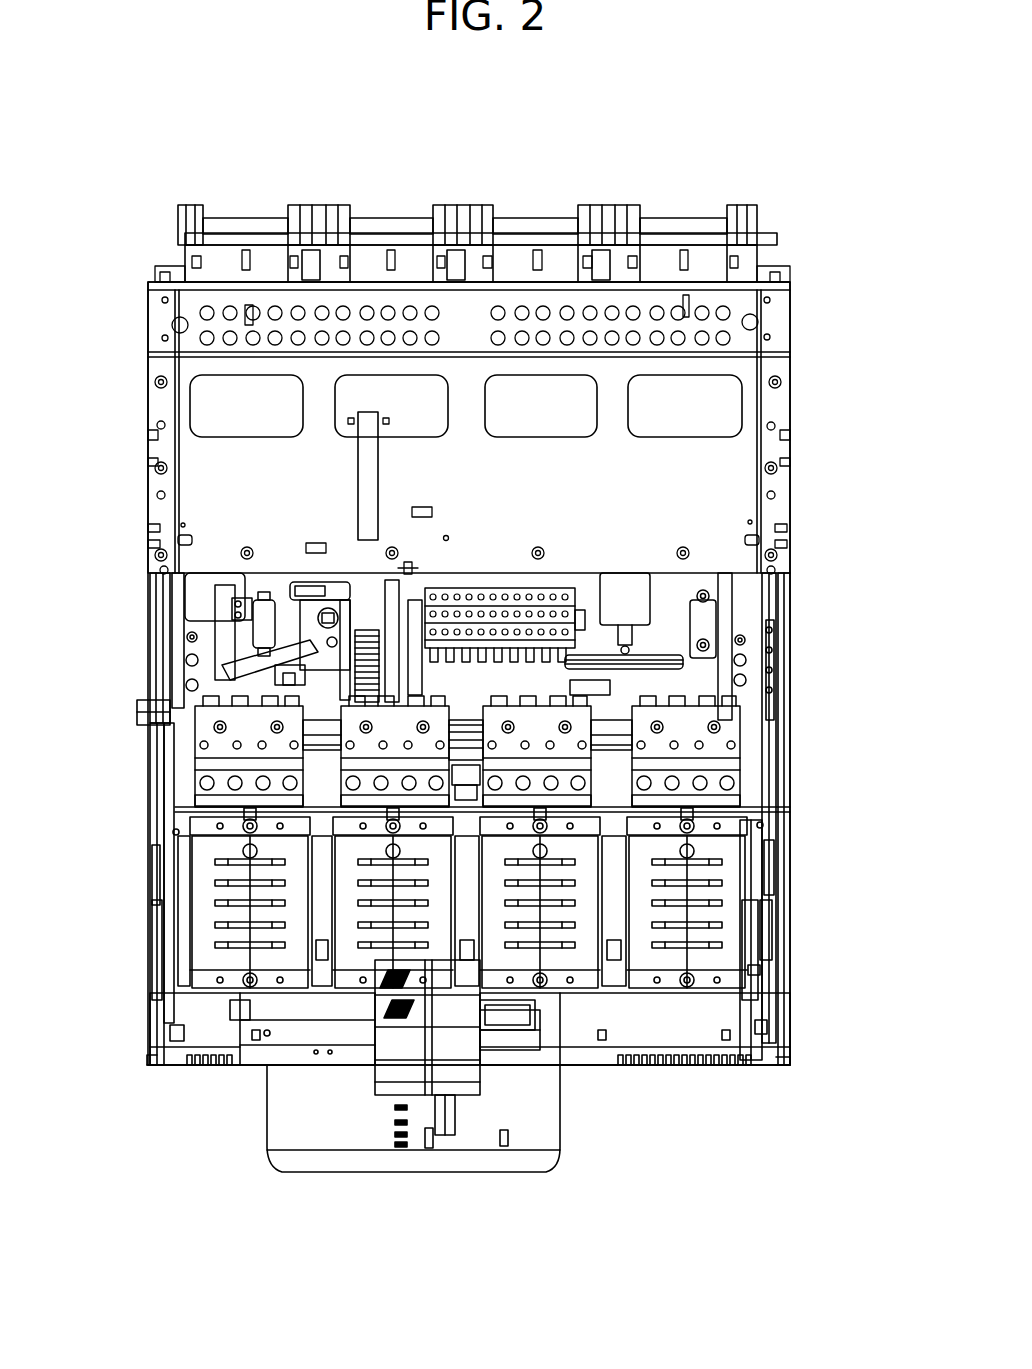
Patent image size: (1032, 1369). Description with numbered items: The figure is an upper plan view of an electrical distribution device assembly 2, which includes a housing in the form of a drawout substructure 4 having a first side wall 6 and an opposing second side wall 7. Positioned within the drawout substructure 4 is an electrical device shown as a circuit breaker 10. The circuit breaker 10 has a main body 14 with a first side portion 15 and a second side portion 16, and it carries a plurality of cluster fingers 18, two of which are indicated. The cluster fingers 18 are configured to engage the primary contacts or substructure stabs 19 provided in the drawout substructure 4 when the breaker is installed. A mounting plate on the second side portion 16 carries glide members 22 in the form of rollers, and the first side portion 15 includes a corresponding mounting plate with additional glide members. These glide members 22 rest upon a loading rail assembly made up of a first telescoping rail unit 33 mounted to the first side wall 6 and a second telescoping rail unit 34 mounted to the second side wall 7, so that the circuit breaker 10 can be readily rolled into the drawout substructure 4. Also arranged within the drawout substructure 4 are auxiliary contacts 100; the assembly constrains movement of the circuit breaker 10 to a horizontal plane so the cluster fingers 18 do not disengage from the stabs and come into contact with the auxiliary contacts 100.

The electrical distribution device assembly 2 is at (770, 1283).
The drawout substructure 4 is at (795, 948).
The first side wall 6 is at (148, 655).
The second side wall 7 is at (790, 402).
The circuit breaker 10 is at (658, 1138).
The main body 14 is at (762, 1072).
The first side portion 15 is at (148, 1055).
The second side portion 16 is at (790, 1042).
The cluster fingers 18 is at (598, 728).
The substructure stabs 19 is at (394, 210).
The glide member 22 is at (790, 852).
The first telescoping rail unit 33 is at (160, 783).
The second telescoping rail unit 34 is at (792, 823).
The auxiliary contacts 100 is at (552, 680).